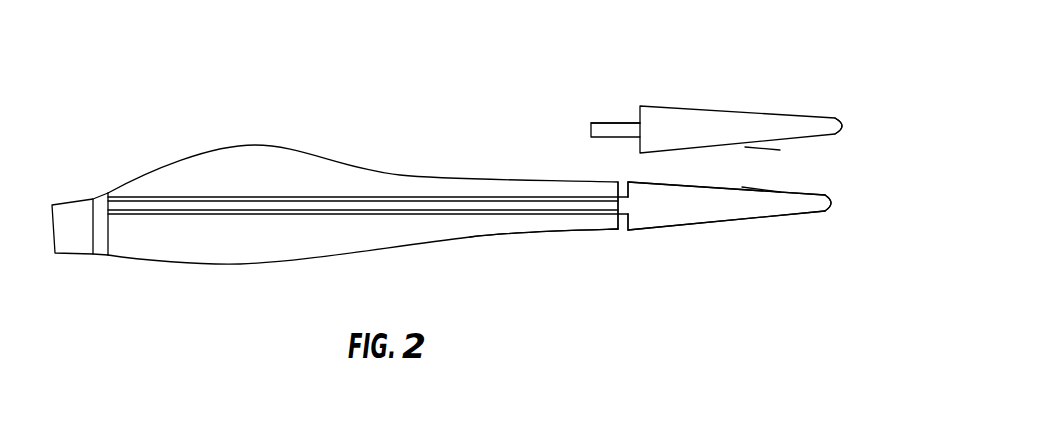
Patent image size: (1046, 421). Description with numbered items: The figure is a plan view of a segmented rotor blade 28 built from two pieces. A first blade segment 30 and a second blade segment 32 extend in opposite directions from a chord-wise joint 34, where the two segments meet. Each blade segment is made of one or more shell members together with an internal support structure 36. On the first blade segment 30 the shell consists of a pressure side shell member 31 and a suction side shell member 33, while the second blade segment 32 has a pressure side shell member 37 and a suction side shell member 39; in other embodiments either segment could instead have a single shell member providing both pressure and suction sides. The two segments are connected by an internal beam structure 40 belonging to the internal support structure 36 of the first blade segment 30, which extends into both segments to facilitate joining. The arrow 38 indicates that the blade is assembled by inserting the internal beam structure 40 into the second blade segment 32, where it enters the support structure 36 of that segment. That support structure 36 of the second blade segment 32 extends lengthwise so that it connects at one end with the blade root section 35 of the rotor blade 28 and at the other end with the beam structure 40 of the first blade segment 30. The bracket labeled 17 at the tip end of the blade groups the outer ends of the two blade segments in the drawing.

The rotor blade 28 is at (82, 100).
The blade root section 35 is at (78, 238).
The second blade segment 32 is at (145, 252).
The suction side shell member 39 is at (483, 188).
The internal support structure 36 is at (375, 197).
The internal beam structure 40 is at (619, 123).
The first blade segment 30 is at (713, 117).
The suction side shell member 33 is at (677, 200).
The pressure side shell member 31 is at (675, 235).
The chord-wise joint 34 is at (622, 224).
The pressure side shell member 37 is at (565, 237).
The arrow 38 is at (745, 147).
The cutting tip 17 is at (847, 126).